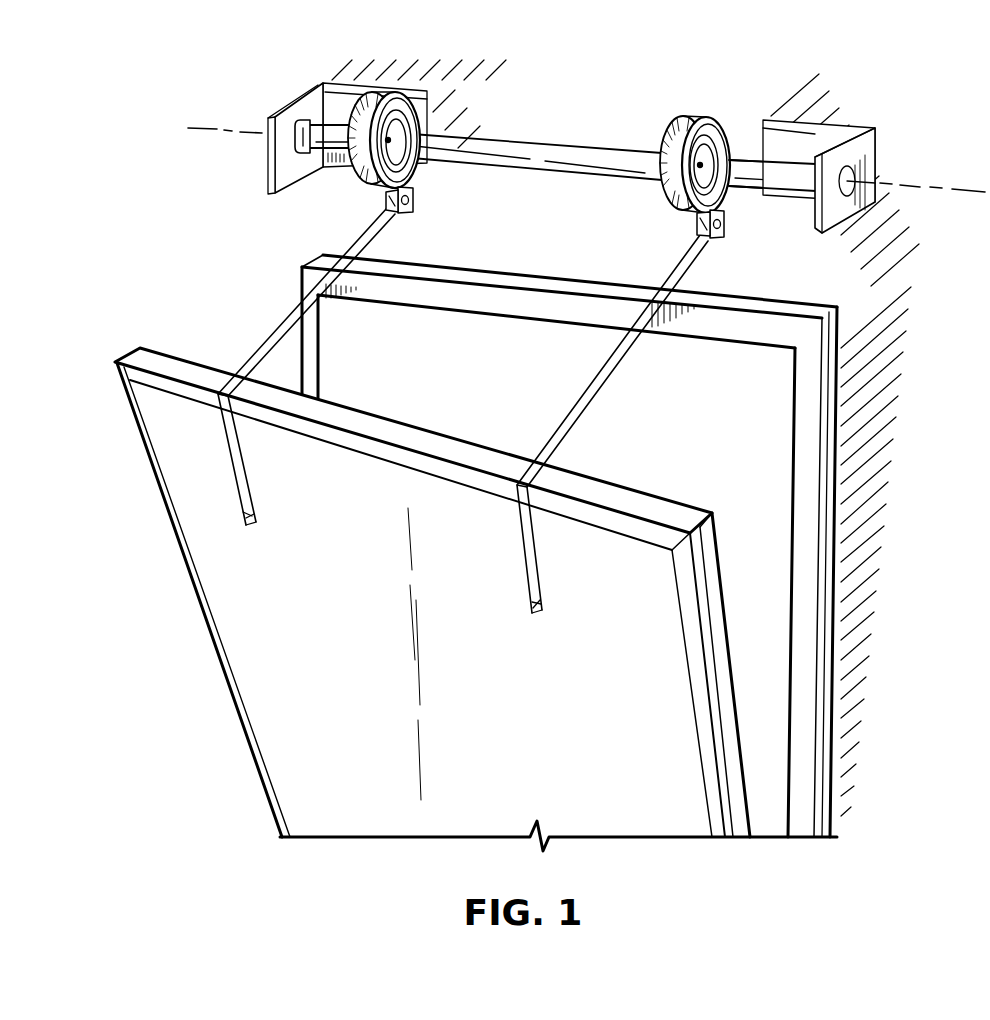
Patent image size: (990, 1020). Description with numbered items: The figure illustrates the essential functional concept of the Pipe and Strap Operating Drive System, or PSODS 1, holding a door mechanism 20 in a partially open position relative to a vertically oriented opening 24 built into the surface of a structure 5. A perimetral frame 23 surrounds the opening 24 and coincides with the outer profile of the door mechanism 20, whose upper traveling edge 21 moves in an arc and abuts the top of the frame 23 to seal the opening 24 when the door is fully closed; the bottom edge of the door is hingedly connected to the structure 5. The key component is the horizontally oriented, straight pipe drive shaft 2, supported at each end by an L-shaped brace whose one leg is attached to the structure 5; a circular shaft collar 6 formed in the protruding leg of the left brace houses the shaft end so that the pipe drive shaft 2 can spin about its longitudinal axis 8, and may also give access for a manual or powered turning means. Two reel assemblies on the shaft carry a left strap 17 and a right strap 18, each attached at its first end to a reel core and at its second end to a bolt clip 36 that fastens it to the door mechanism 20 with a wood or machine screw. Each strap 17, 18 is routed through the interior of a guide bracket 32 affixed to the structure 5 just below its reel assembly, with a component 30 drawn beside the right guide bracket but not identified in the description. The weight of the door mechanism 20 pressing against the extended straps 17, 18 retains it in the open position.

The Pipe and Strap Operating Drive System 1 is at (138, 163).
The pipe drive shaft 2 is at (553, 147).
The structure 5 is at (862, 420).
The circular shaft collar 6 is at (302, 150).
The longitudinal axis 8 is at (207, 128).
The left strap 17 is at (267, 337).
The right strap 18 is at (572, 414).
The door mechanism 20 is at (476, 592).
The traveling edge 21 is at (338, 423).
The frame 23 is at (840, 367).
The opening 24 is at (503, 372).
The strap clamp 30 is at (695, 222).
The guide bracket 32 is at (605, 224).
The bolt clip 36 is at (247, 526).